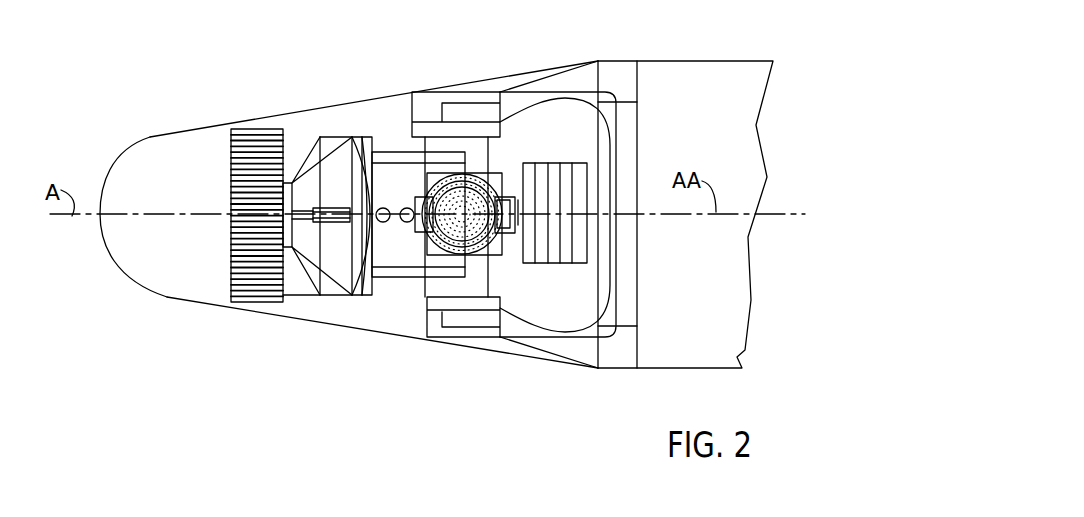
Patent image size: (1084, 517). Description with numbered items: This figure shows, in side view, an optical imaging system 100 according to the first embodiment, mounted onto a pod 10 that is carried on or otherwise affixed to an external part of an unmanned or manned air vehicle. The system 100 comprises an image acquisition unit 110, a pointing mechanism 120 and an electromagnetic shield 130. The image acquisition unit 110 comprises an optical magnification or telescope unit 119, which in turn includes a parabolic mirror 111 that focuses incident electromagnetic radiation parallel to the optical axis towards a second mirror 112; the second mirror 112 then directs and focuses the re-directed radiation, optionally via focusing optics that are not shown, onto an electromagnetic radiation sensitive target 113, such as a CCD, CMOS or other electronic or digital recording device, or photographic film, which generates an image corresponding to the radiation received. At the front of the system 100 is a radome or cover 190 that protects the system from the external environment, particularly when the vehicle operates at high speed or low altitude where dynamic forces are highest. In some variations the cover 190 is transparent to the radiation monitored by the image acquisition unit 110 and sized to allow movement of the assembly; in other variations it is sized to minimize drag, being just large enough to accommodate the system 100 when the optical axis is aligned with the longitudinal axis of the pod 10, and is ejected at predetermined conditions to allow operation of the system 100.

The pod 10 is at (702, 61).
The optical imaging system 100 is at (172, 101).
The image acquisition unit 110 is at (395, 292).
The parabolic mirror 111 is at (352, 138).
The second mirror 112 is at (320, 297).
The electromagnetic radiation sensitive target 113 is at (378, 203).
The optical magnification or telescope unit 119 is at (310, 258).
The pointing mechanism 120 is at (582, 348).
The electromagnetic shield 130 is at (254, 309).
The radome or cover 190 is at (130, 286).